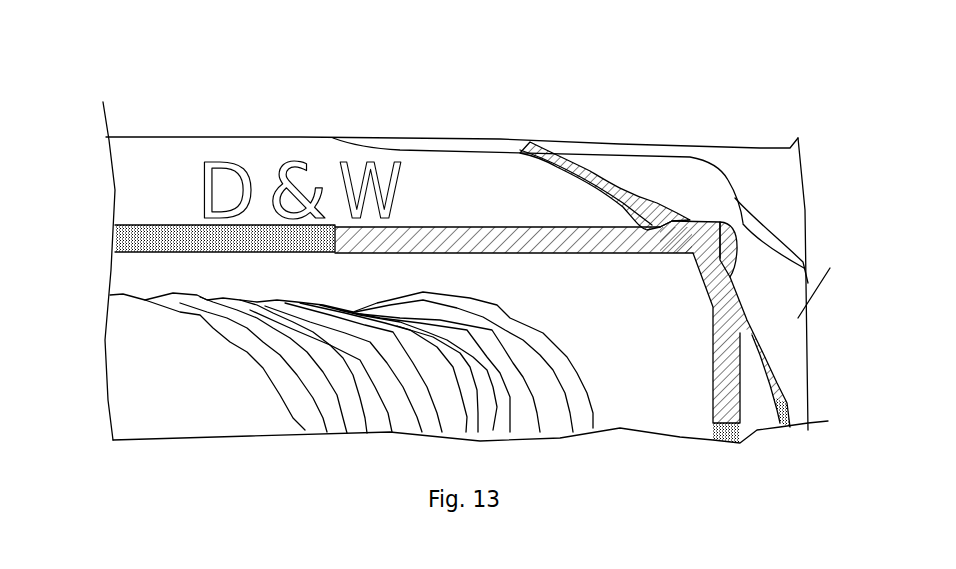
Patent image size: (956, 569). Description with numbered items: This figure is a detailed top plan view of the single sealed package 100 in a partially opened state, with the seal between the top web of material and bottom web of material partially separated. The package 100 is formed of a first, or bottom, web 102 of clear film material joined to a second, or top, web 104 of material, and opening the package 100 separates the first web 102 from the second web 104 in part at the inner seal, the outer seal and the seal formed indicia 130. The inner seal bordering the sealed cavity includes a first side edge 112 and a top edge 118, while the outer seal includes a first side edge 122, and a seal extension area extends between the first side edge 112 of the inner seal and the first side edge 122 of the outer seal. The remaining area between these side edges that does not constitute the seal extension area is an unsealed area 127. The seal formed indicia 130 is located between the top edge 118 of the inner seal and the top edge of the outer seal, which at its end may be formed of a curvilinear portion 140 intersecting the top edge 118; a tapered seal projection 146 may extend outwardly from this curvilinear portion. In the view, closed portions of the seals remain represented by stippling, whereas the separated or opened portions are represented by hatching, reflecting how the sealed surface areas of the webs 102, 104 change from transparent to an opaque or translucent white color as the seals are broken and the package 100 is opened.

The package 100 is at (413, 85).
The first web 102 is at (770, 163).
The second web 104 is at (763, 224).
The first side edge of the inner seal 112 is at (713, 403).
The top edge of the inner seal 118 is at (145, 226).
The first side edge of the outer seal 122 is at (778, 362).
The unsealed area 127 is at (758, 405).
The seal formed indicia 130 is at (277, 137).
The curvilinear portion 140 is at (633, 180).
The tapered seal projection 146 is at (732, 268).